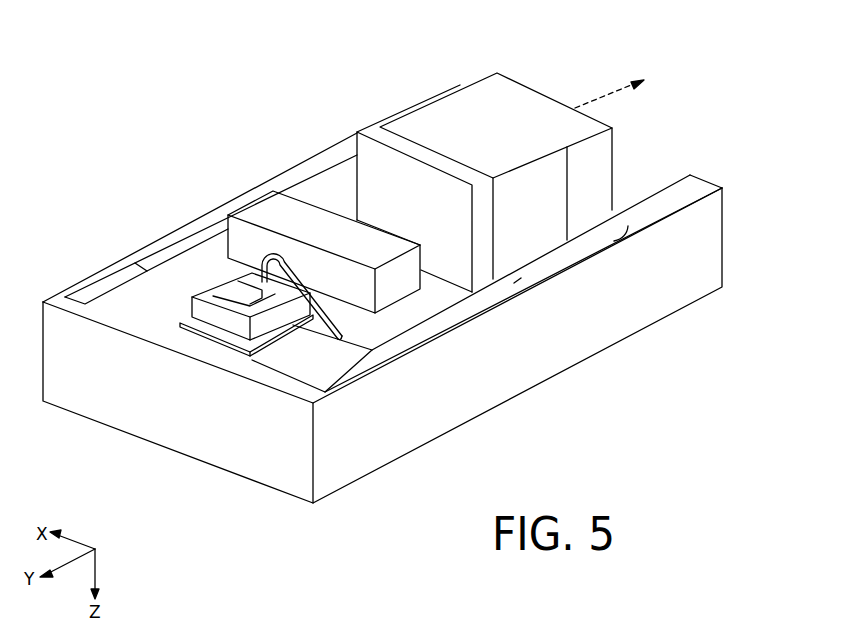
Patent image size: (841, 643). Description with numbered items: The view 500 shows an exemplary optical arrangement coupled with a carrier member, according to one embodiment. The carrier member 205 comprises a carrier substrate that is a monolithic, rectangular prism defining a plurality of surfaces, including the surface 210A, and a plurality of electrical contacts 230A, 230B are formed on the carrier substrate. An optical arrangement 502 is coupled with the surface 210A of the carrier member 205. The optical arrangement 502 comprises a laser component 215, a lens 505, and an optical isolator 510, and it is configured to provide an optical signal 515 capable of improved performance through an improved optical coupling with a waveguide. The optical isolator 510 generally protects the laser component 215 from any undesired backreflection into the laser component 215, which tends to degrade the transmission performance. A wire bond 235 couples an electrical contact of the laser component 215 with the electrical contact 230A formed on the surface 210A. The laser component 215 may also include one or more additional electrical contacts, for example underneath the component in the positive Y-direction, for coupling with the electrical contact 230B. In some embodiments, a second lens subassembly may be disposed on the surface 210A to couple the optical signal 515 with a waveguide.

The view 500 is at (178, 134).
The carrier member 205 is at (605, 333).
The surface 210A is at (425, 333).
The electrical contact 230A is at (343, 373).
The electrical contact 230B is at (92, 288).
The laser component 215 is at (218, 318).
The wire bond 235 is at (325, 303).
The lens 505 is at (259, 197).
The optical isolator 510 is at (495, 70).
The optical arrangement 502 is at (517, 281).
The optical signal 515 is at (590, 102).